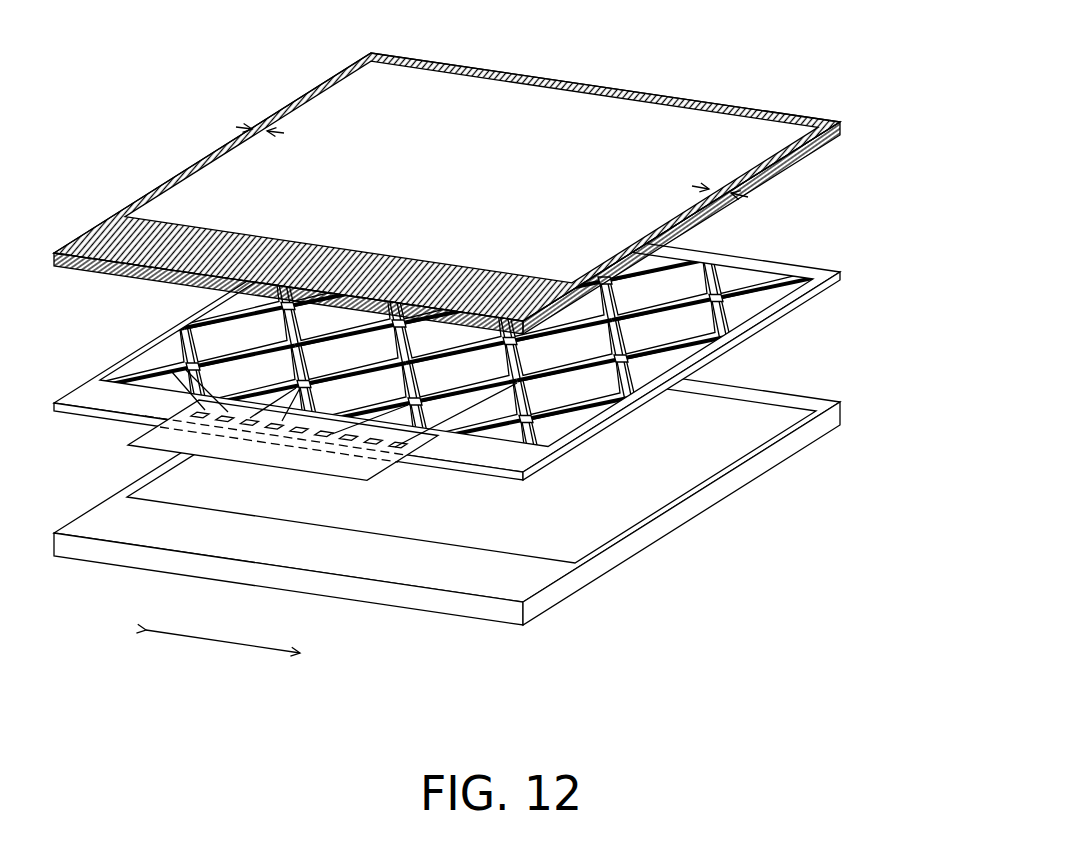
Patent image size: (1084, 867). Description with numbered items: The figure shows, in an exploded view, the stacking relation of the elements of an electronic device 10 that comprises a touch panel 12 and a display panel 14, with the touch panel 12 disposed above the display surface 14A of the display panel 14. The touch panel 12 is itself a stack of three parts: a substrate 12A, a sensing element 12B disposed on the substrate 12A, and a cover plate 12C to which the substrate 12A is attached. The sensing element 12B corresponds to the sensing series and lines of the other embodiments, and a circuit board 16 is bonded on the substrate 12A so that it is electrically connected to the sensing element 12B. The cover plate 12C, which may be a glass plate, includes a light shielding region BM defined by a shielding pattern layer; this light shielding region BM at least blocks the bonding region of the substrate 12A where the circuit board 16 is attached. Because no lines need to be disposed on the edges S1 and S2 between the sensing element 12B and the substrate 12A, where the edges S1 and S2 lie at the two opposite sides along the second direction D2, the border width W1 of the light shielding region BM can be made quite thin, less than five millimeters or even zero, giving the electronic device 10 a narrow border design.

The electronic device 10 is at (498, 346).
The touch panel 12 is at (498, 246).
The substrate 12A is at (830, 271).
The sensing element 12B is at (493, 324).
The cover plate 12C is at (483, 173).
The light shielding region BM is at (125, 236).
The border width W1 is at (262, 122).
The edge S1 is at (766, 331).
The edge S2 is at (167, 330).
The display panel 14 is at (471, 479).
The display surface 14A is at (770, 423).
The circuit board 16 is at (162, 441).
The second direction D2 is at (245, 654).